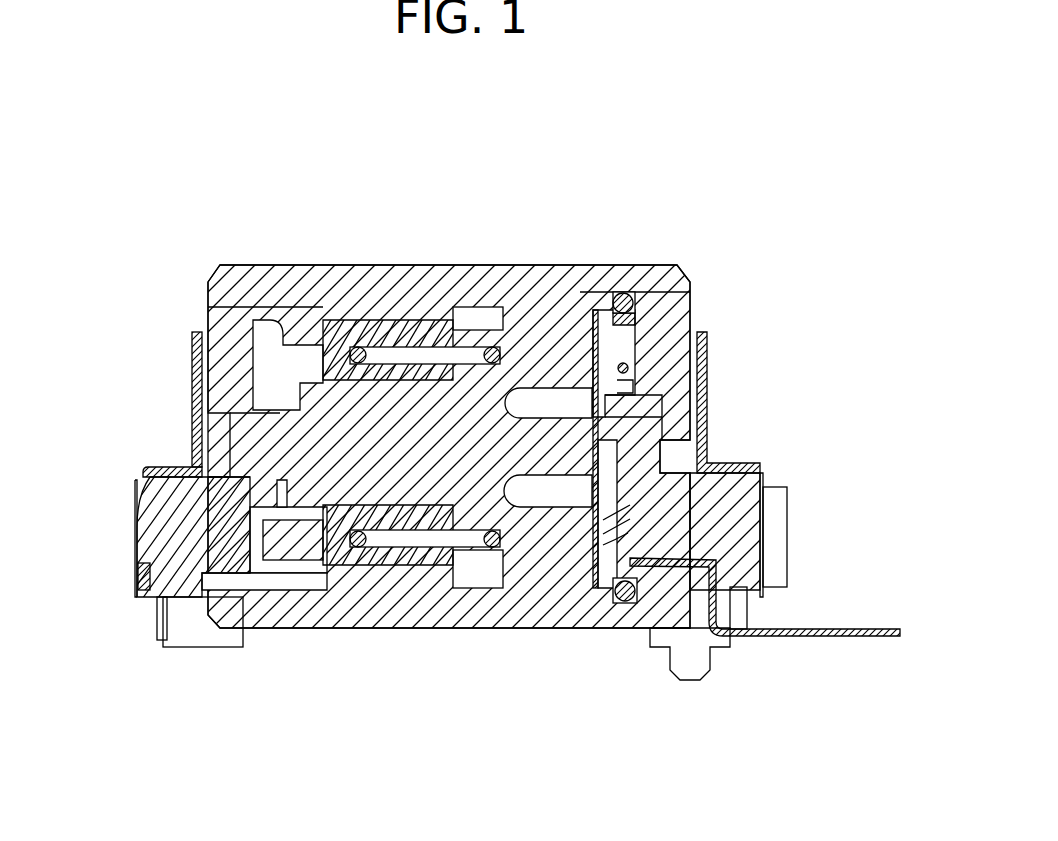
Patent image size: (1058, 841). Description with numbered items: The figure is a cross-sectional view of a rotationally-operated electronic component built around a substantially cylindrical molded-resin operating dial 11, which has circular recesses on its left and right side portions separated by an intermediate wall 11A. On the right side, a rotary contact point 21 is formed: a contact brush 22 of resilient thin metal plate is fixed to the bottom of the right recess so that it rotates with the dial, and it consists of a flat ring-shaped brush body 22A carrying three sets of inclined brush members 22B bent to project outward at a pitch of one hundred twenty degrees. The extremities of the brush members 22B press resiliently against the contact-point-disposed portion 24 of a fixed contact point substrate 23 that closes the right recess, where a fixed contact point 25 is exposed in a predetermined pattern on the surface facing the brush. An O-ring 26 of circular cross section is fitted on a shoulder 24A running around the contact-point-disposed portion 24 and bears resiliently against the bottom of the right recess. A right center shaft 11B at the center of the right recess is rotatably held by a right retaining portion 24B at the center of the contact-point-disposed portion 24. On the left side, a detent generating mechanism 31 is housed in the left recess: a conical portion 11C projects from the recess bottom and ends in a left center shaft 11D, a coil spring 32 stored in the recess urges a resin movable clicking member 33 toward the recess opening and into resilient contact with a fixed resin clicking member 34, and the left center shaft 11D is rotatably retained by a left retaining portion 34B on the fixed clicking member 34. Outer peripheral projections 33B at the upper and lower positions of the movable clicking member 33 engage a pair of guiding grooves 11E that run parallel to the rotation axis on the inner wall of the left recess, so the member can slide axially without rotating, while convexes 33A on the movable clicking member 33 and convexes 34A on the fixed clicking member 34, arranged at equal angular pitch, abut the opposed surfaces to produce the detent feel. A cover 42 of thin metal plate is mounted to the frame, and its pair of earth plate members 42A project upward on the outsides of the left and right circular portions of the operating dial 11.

The operating dial 11 is at (655, 147).
The intermediate wall 11A is at (530, 348).
The right center shaft 11B is at (558, 437).
The conical portion 11C is at (420, 438).
The left center shaft 11D is at (287, 430).
The guiding grooves 11E is at (485, 318).
The rotary contact point 21 is at (855, 258).
The contact brush 22 is at (800, 258).
The brush body 22A is at (630, 308).
The brush members 22B is at (630, 366).
The contact point substrate 23 is at (800, 350).
The contact-point-disposed portion 24 is at (647, 397).
The shoulder 24A is at (712, 498).
The right retaining portion 24B is at (662, 430).
The fixed contact point 25 is at (650, 582).
The O-ring 26 is at (627, 600).
The detent generating mechanism 31 is at (472, 752).
The coil spring 32 is at (490, 550).
The movable clicking member 33 is at (330, 540).
The convexes 33A is at (294, 547).
The outer peripheral projections 33B is at (352, 349).
The fixed clicking member 34 is at (180, 543).
The convexes 34A is at (267, 567).
The left retaining portion 34B is at (232, 483).
The cover 42 is at (160, 468).
The earth plate members 42A is at (192, 375).